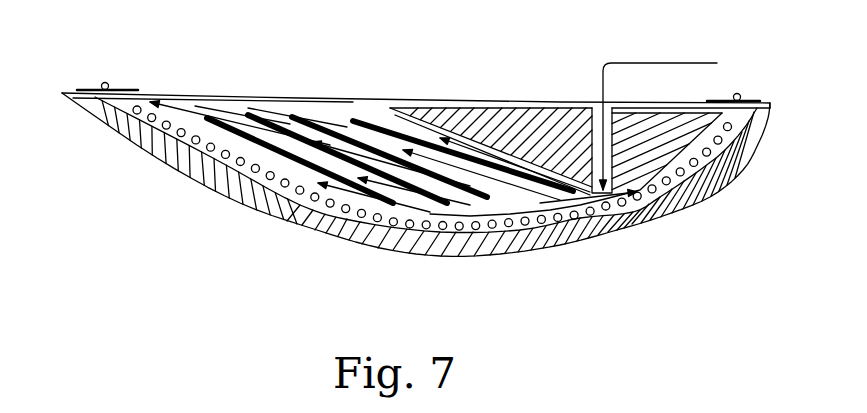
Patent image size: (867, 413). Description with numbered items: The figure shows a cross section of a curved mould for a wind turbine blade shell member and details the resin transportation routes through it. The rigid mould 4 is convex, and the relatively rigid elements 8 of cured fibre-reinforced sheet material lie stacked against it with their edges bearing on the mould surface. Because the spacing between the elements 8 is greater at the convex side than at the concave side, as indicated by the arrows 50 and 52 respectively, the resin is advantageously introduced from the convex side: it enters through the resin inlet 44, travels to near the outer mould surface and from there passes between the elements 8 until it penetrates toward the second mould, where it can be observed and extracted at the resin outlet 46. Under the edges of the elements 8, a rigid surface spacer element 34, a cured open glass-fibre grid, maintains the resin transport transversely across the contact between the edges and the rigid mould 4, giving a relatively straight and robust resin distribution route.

The rigid mould 4 is at (416, 189).
The elements 8 is at (238, 136).
The surface spacer element 34 is at (335, 207).
The resin inlet 44 is at (593, 96).
The resin outlet 46 is at (107, 83).
The arrows 50 is at (463, 210).
The arrows 52 is at (243, 108).